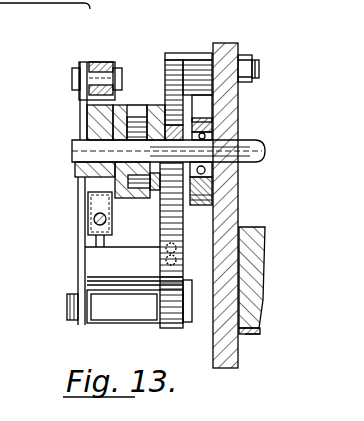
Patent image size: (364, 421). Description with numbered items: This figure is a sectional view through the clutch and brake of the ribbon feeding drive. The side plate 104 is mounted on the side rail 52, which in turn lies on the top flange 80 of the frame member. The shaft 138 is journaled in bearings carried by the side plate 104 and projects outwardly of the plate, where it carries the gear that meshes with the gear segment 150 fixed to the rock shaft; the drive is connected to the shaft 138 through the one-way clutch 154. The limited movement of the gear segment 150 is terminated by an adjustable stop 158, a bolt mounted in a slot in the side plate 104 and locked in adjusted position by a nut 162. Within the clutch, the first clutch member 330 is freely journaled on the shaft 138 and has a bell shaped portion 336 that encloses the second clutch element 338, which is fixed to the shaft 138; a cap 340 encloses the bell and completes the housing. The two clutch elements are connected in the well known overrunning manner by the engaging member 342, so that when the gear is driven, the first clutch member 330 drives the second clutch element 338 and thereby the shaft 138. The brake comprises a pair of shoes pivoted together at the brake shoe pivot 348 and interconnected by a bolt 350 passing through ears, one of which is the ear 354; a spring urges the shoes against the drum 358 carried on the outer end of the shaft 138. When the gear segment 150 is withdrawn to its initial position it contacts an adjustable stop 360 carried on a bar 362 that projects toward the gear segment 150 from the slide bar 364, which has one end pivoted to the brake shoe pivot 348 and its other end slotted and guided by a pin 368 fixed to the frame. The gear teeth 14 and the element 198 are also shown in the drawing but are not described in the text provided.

The side plate 104 is at (228, 43).
The side rail 52 is at (255, 228).
The top flange 80 is at (253, 337).
The shaft 138 is at (250, 140).
The nut 162 is at (248, 58).
The adjustable stop 158 is at (173, 54).
The gear 198 is at (186, 110).
The gear teeth 14 is at (163, 90).
The brake shoe pivot 348 is at (105, 78).
The cap 340 is at (88, 118).
The bell shaped portion 336 is at (133, 108).
The slide bar 364 is at (80, 140).
The drum 358 is at (77, 172).
The one-way clutch 154 is at (140, 186).
The gear segment 150 is at (166, 325).
The first clutch member 330 is at (185, 192).
The second clutch element 338 is at (92, 188).
The engaging member 342 is at (72, 120).
The bolt 350 is at (94, 226).
The ear 354 is at (103, 235).
The bar 362 is at (105, 262).
The adjustable stop 360 is at (150, 262).
The pin 368 is at (72, 309).